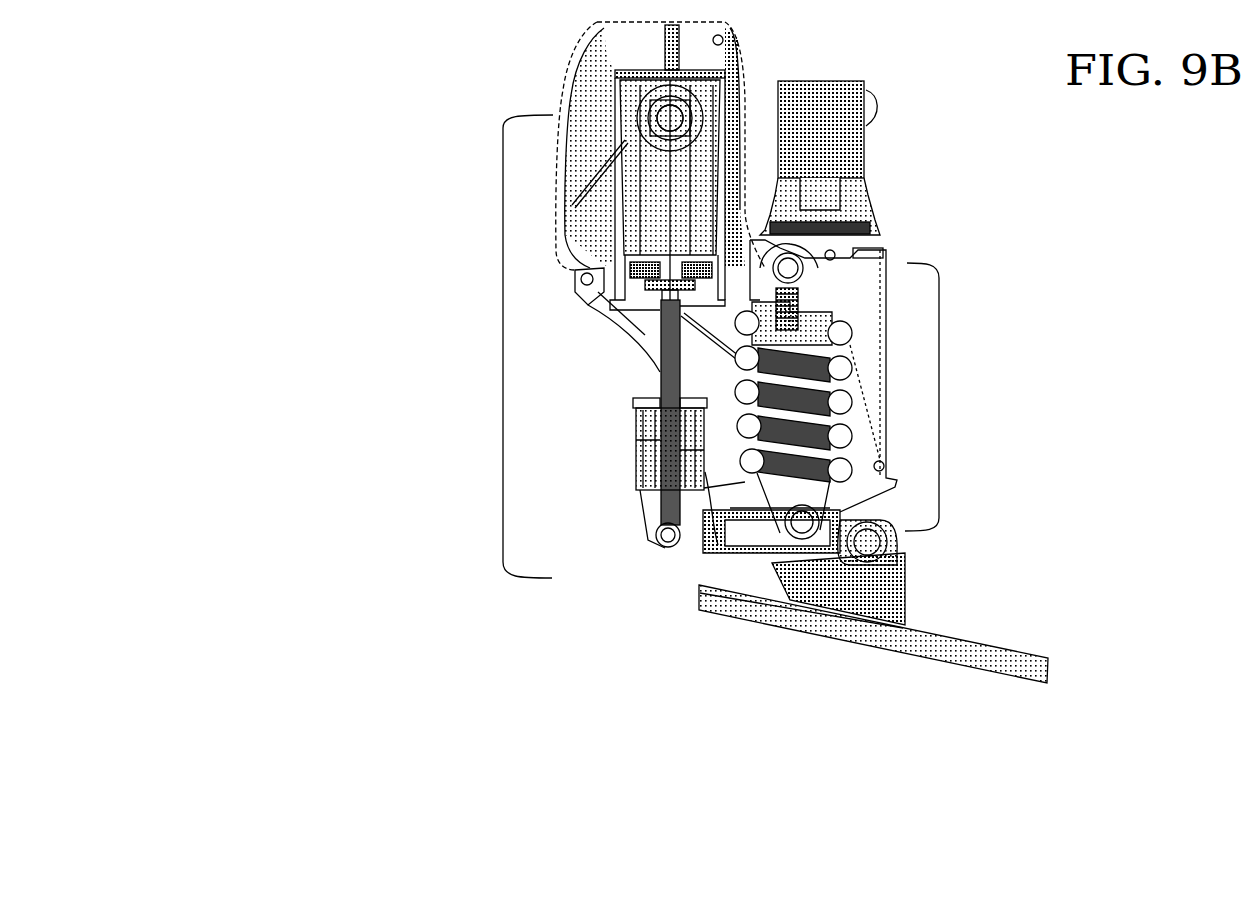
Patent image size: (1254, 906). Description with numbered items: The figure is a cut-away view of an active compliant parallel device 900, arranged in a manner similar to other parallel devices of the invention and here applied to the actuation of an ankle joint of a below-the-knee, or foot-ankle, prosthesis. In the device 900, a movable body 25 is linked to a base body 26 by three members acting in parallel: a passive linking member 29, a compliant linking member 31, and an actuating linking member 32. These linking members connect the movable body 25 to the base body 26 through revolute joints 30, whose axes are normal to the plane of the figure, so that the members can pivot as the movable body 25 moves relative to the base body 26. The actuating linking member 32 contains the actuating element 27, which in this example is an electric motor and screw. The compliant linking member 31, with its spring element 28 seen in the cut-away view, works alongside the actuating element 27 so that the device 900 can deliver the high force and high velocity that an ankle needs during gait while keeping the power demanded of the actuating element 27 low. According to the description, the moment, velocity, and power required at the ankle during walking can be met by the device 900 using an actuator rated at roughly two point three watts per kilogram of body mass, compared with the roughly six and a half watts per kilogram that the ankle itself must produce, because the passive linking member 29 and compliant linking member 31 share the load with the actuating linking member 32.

The movable body 25 is at (748, 540).
The base body 26 is at (900, 248).
The actuating element 27 is at (622, 460).
The spring 28 is at (870, 423).
The passive linking member 29 is at (922, 627).
The revolute joints 30 is at (650, 117).
The compliant linking member 31 is at (939, 398).
The actuating linking member 32 is at (503, 350).
The active compliant parallel device 900 is at (300, 719).